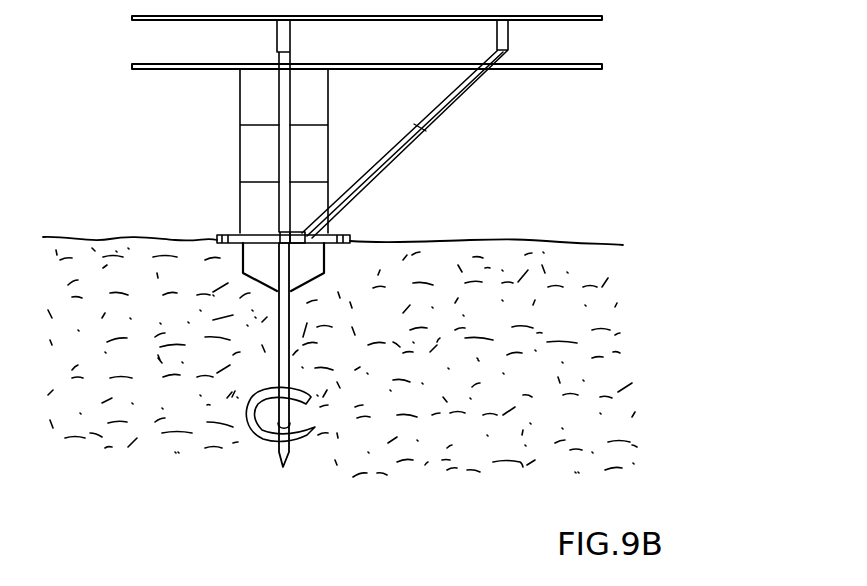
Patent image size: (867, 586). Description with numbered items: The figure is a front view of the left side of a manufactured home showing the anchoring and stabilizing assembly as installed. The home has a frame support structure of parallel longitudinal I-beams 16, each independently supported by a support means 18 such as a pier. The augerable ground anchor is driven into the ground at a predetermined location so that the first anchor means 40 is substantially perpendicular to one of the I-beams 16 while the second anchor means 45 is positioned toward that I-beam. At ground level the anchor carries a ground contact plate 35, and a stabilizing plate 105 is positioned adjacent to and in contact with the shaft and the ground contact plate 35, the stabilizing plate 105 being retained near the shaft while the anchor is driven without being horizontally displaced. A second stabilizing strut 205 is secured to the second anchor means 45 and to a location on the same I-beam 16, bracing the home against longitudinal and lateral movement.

The longitudinal I-beam 16 is at (165, 46).
The support means 18 is at (239, 130).
The first anchor means 40 is at (278, 232).
The second anchor means 45 is at (301, 232).
The ground contact plate 35 is at (342, 233).
The second stabilizing strut 205 is at (430, 128).
The stabilizing plate 105 is at (300, 257).